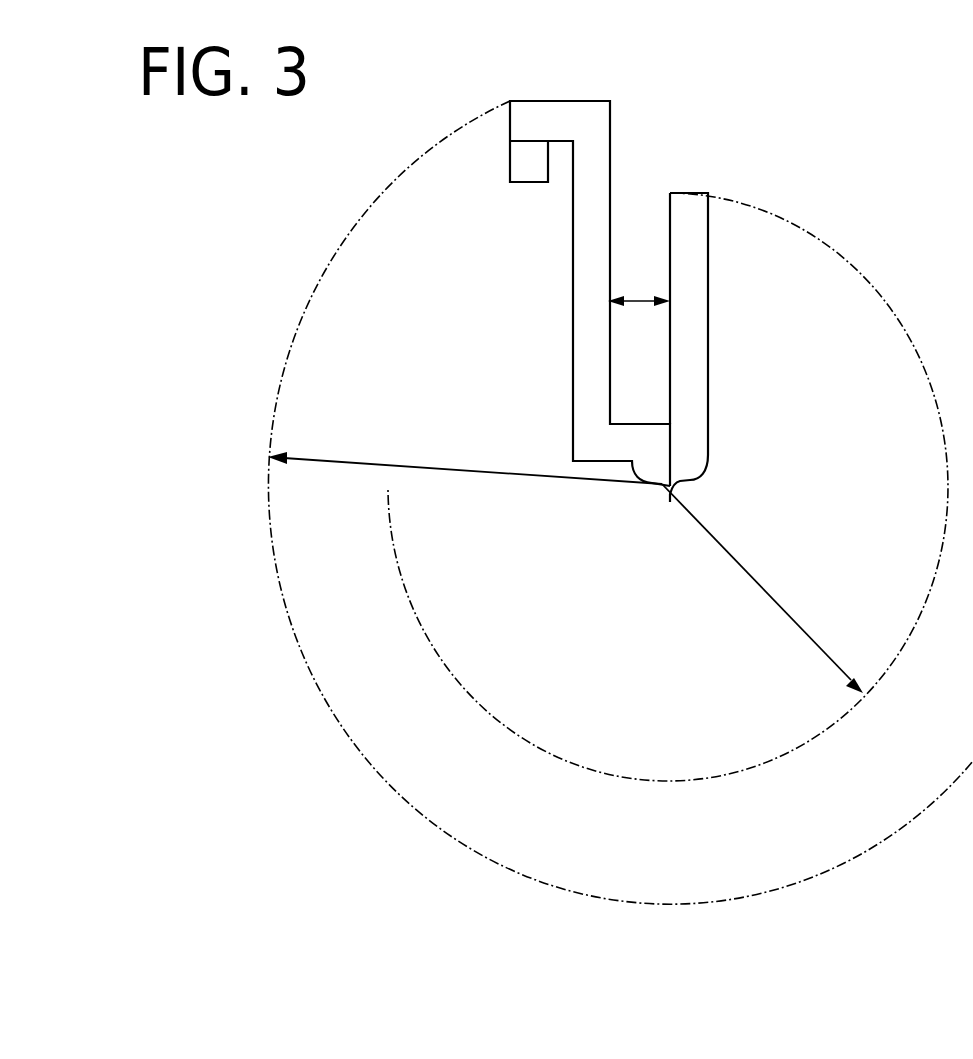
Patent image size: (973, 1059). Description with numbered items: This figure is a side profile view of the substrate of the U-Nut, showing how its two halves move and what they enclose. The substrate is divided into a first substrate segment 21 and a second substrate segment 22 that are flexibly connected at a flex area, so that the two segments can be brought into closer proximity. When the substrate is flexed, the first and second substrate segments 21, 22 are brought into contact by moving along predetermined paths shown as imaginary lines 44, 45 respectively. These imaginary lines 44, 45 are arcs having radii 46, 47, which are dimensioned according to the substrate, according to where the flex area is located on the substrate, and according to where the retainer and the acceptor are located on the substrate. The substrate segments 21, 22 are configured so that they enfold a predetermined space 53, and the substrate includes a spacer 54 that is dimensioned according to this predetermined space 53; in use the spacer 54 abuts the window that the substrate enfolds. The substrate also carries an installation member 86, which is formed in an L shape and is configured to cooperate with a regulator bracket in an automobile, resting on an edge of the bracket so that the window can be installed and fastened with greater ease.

The first substrate segment 21 is at (693, 265).
The second substrate segment 22 is at (597, 119).
The imaginary line 44 is at (432, 148).
The imaginary line 45 is at (802, 225).
The radius 46 is at (432, 466).
The radius 47 is at (777, 600).
The predetermined space 53 is at (642, 298).
The spacer 54 is at (637, 424).
The installation member 86 is at (509, 146).